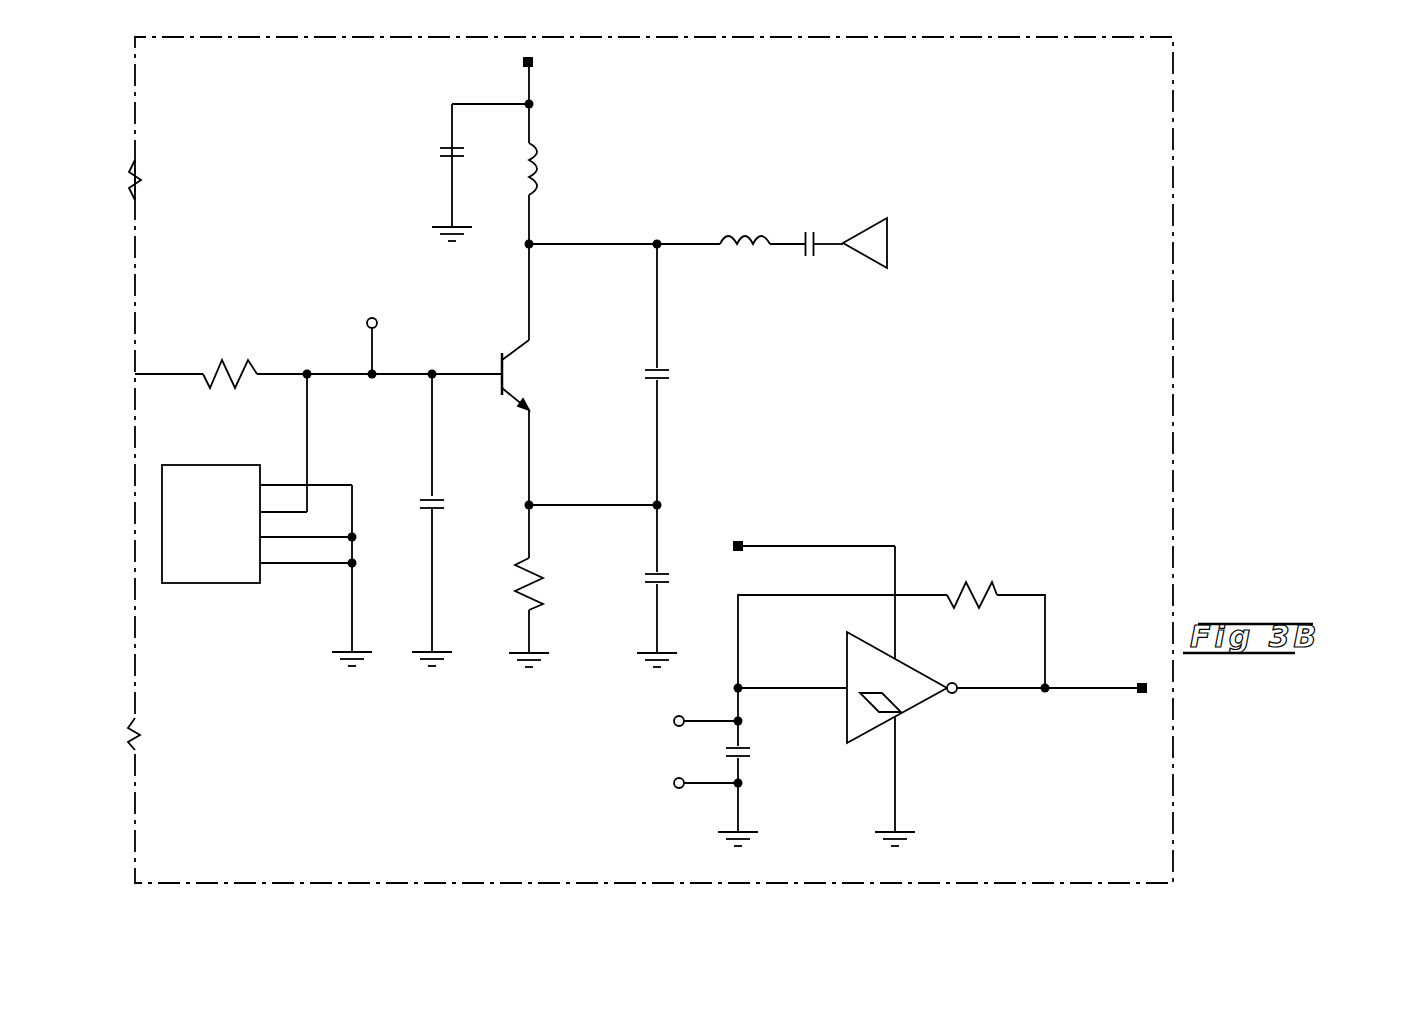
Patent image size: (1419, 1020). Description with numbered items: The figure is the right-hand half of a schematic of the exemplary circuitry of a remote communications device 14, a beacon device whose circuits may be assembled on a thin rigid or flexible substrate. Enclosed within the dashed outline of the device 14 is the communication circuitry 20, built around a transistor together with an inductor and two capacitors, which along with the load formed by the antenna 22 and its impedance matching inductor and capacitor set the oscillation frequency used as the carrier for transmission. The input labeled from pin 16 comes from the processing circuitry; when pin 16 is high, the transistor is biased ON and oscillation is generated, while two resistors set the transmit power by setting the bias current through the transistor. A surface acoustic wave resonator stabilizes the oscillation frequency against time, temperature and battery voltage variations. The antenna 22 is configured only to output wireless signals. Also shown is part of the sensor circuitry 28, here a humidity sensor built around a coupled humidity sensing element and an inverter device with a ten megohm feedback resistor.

The remote communications device 14 is at (1173, 225).
The pin 16 is at (169, 374).
The communication circuitry 20 is at (1008, 193).
The antenna 22 is at (888, 243).
The sensor circuitry 28 is at (1050, 575).